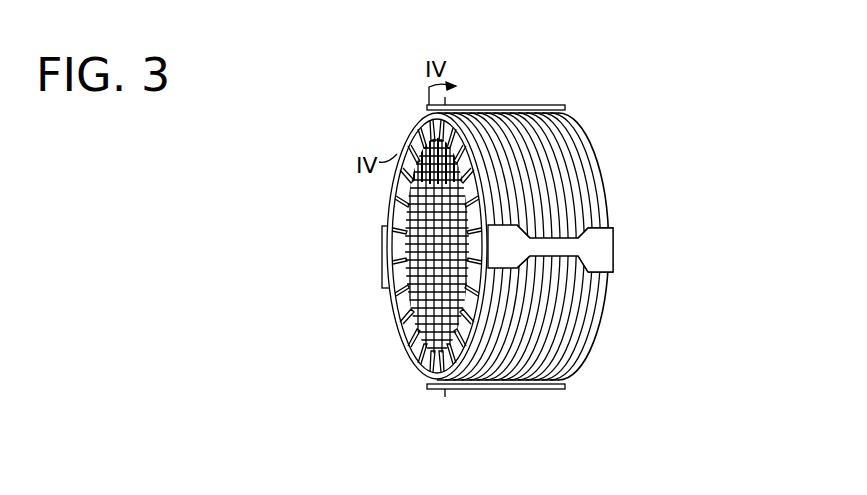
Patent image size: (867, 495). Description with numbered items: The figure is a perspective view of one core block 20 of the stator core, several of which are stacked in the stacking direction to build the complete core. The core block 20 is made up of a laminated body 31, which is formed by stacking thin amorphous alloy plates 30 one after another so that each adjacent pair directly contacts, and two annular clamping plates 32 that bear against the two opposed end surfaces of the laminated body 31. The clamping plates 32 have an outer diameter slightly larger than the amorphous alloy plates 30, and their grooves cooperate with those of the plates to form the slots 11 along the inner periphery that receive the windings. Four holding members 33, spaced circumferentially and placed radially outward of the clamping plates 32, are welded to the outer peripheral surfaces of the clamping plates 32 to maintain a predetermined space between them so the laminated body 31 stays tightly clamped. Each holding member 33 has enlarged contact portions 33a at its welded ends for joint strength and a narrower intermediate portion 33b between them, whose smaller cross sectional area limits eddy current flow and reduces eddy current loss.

The slots 11 is at (425, 377).
The core block 20 is at (596, 106).
The amorphous alloy plates 30 is at (570, 360).
The laminated body 31 is at (592, 362).
The clamping plate 32 is at (470, 105).
The holding member 33 is at (531, 106).
The contact portion 33a is at (610, 224).
The intermediate portion 33b is at (606, 284).